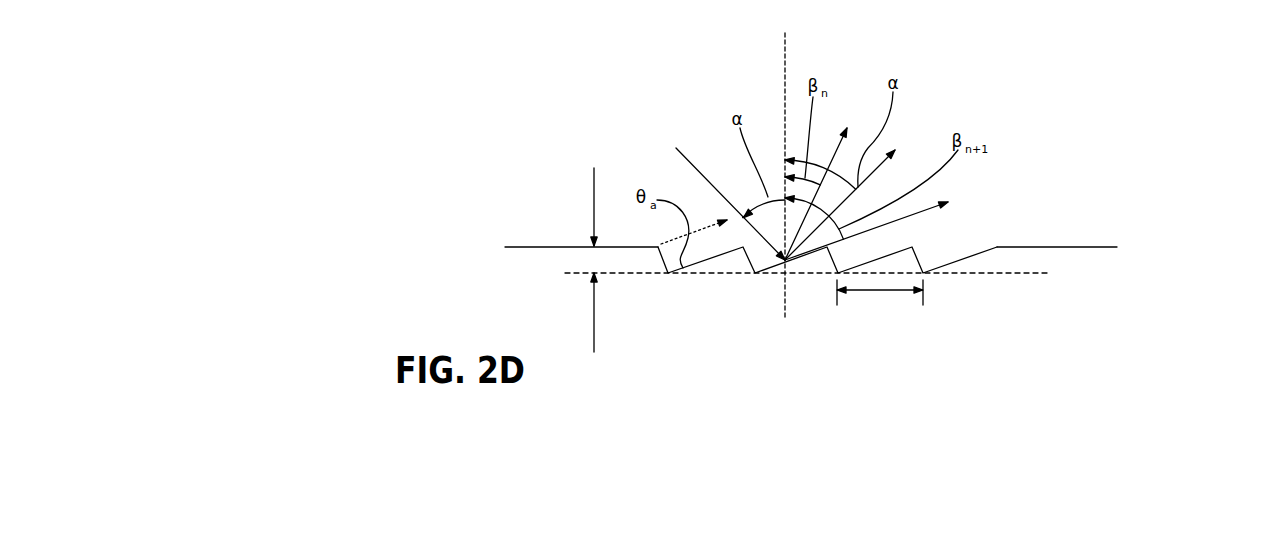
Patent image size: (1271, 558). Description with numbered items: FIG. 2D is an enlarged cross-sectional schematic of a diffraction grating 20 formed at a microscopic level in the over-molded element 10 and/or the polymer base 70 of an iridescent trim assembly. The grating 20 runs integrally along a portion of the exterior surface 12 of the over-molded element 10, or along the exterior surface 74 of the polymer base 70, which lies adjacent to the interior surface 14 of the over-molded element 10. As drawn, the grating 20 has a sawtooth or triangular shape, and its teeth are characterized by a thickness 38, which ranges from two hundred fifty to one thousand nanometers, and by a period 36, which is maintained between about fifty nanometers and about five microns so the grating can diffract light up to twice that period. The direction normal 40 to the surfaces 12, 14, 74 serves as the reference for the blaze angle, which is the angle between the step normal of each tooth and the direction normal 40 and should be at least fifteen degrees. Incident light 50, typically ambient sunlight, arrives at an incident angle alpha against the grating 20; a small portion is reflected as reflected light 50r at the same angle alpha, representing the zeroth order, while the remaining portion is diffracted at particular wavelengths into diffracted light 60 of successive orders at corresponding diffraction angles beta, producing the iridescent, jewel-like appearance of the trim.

The over-molded element 10 is at (807, 306).
The exterior surface 12 is at (866, 212).
The interior surface 14 is at (866, 212).
The exterior surface 74 is at (1095, 244).
The diffraction grating 20 is at (1063, 108).
The period 36 is at (865, 290).
The thickness 38 is at (594, 208).
The direction normal 40 is at (783, 62).
The incident light 50 is at (721, 193).
The reflected light 50r is at (853, 193).
The diffracted light 60 is at (896, 182).
The polymer base 70 is at (747, 364).